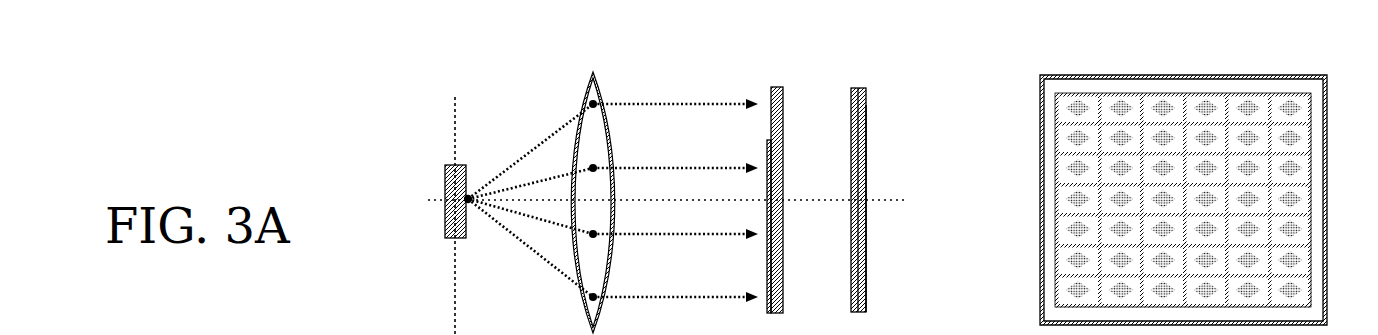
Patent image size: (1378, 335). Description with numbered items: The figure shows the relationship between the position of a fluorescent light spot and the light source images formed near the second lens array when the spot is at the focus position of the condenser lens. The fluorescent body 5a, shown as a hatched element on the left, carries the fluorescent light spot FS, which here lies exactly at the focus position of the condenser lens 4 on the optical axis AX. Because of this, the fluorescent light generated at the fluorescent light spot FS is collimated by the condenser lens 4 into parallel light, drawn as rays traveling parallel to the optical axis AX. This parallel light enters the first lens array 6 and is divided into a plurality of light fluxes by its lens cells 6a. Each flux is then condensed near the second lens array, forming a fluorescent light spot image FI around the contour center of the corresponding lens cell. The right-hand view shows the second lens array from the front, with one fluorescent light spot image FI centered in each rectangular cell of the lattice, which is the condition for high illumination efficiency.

The condenser lens 4 is at (596, 80).
The fluorescent body 5a is at (451, 237).
The fluorescent light spot FS is at (468, 197).
The first lens array 6 is at (783, 99).
The lens cell of the first lens array 6a is at (768, 140).
The optical axis AX is at (887, 193).
The fluorescent light spot image FI is at (1238, 108).